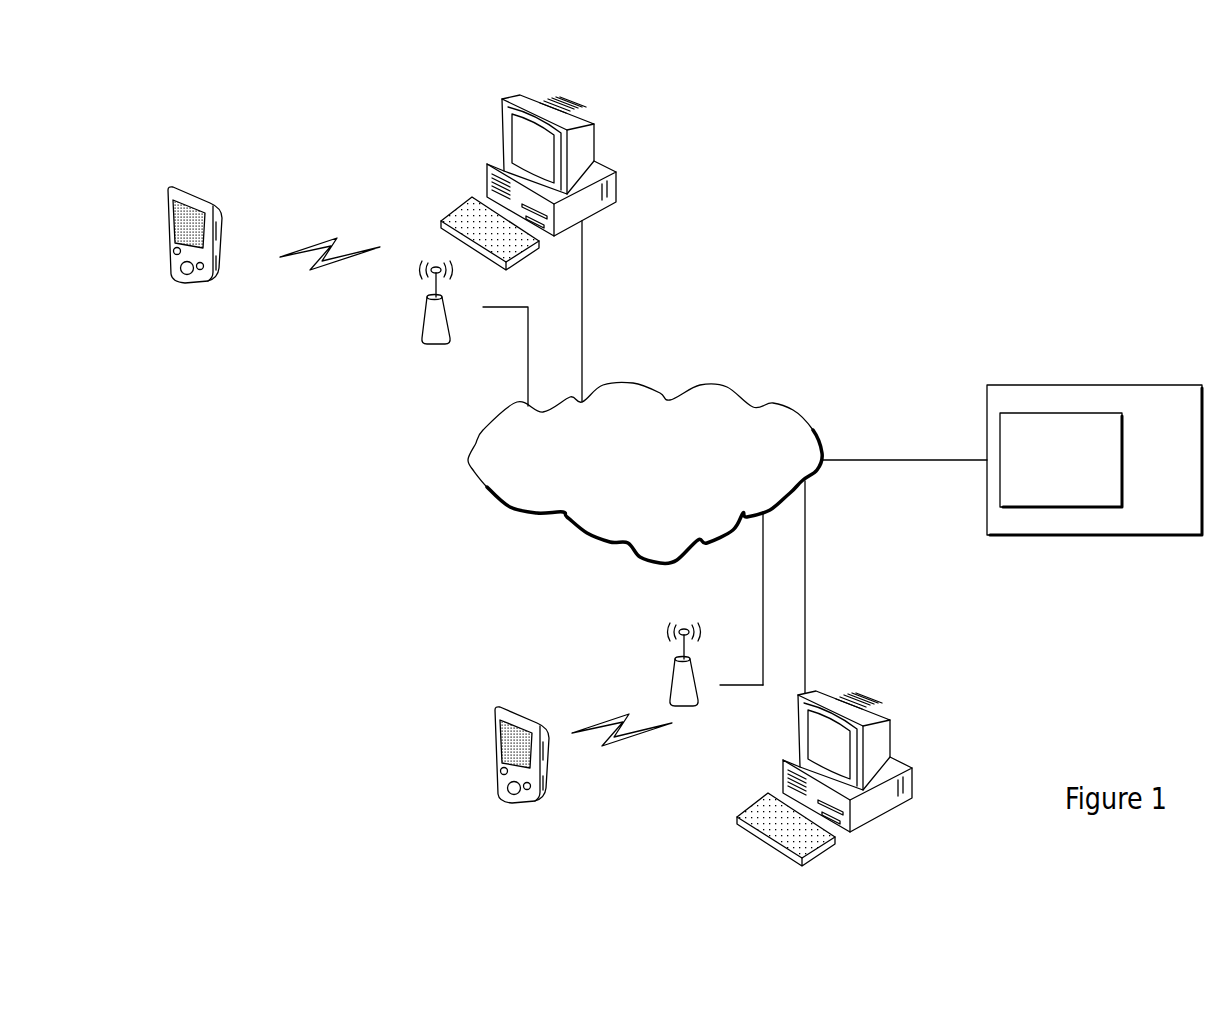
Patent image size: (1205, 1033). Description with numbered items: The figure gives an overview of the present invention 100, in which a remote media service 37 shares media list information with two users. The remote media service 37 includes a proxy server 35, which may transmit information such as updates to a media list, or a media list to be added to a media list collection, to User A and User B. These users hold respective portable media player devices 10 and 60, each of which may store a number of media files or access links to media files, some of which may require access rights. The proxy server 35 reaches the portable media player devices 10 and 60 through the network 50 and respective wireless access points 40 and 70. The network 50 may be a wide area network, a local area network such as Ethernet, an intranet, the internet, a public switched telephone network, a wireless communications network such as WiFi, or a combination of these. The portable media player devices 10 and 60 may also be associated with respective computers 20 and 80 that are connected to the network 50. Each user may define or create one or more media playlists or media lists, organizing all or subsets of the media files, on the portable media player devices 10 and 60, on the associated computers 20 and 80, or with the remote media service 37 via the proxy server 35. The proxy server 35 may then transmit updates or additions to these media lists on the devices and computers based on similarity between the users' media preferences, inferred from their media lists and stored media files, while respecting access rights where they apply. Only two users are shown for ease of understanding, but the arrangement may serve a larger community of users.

The present invention 100 is at (938, 83).
The portable media player device 10 is at (198, 188).
The computer 20 is at (582, 112).
The proxy server 35 is at (1060, 497).
The remote media service 37 is at (1094, 439).
The wireless access point 40 is at (447, 305).
The network 50 is at (775, 403).
The portable media player device 60 is at (528, 717).
The wireless access point 70 is at (697, 668).
The computer 80 is at (877, 708).